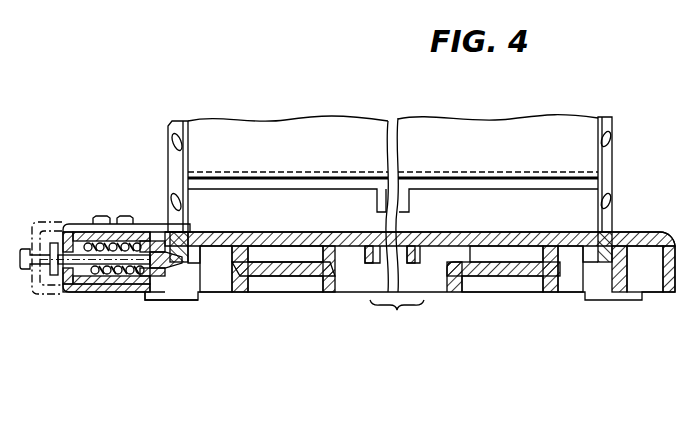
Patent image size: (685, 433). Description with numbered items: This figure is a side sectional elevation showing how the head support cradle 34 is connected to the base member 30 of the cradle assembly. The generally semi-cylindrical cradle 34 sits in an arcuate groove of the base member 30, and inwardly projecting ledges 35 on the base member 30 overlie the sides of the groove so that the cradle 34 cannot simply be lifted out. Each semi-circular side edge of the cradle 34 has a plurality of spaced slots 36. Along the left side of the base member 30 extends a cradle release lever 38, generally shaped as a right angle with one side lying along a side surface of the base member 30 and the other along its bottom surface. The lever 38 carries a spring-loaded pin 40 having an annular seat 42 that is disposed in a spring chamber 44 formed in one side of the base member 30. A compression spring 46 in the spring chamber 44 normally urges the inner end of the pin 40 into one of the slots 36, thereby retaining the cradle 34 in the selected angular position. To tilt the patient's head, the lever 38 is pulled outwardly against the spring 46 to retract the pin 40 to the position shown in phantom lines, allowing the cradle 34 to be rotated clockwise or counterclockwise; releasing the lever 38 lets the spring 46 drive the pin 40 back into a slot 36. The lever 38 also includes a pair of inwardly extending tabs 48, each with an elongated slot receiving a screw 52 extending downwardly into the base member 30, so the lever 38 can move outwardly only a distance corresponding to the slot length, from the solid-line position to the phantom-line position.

The base member 30 is at (672, 292).
The head support cradle 34 is at (172, 124).
The ledges 35 is at (187, 236).
The slots 36 is at (170, 200).
The cradle release lever 38 is at (40, 294).
The pin 40 is at (126, 266).
The annular seat 42 is at (147, 276).
The spring chamber 44 is at (92, 240).
The compression spring 46 is at (104, 276).
The tabs 48 is at (144, 226).
The screw 52 is at (101, 216).